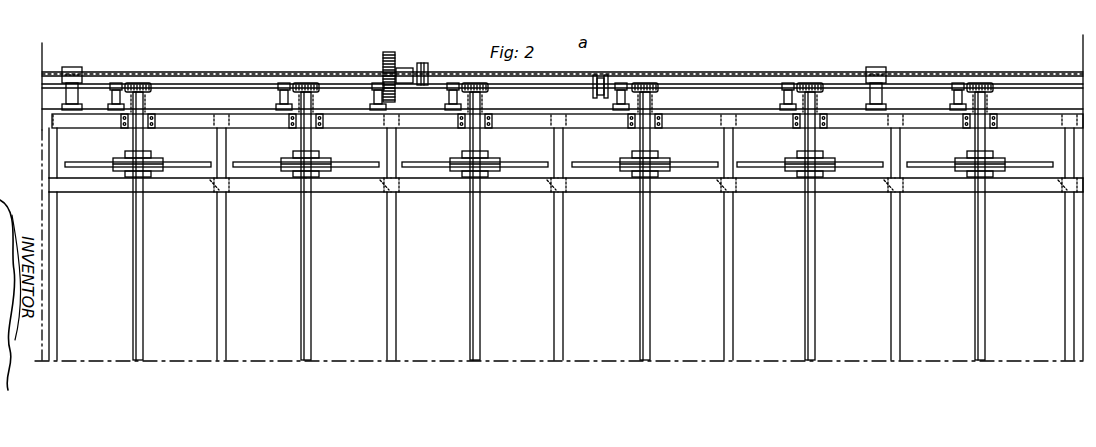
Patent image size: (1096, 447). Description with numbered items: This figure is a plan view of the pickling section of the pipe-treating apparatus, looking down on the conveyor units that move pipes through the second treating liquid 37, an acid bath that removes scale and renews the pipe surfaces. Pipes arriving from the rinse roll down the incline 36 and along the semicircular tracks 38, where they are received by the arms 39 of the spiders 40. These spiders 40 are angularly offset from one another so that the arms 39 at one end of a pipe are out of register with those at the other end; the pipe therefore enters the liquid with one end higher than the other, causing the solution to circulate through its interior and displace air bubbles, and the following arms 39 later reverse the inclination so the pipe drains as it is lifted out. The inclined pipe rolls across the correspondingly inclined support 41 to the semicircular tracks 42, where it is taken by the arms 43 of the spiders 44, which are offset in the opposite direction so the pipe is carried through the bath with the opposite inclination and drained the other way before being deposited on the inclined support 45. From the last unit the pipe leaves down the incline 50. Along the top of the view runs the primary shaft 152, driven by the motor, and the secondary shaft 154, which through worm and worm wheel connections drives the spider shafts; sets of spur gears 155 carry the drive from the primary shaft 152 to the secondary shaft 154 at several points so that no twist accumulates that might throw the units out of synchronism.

The incline 36 is at (52, 165).
The second treating liquid 37 is at (67, 120).
The semicircular tracks 38 is at (108, 185).
The arms 39 is at (120, 161).
The spiders 40 is at (158, 162).
The inclined support 41 is at (221, 185).
The semicircular tracks 42 is at (288, 185).
The arms 43 is at (285, 161).
The spiders 44 is at (326, 162).
The inclined support 45 is at (390, 186).
The incline 50 is at (1070, 186).
The primary shaft 152 is at (199, 72).
The secondary shaft 154 is at (262, 86).
The spur gears 155 is at (389, 52).